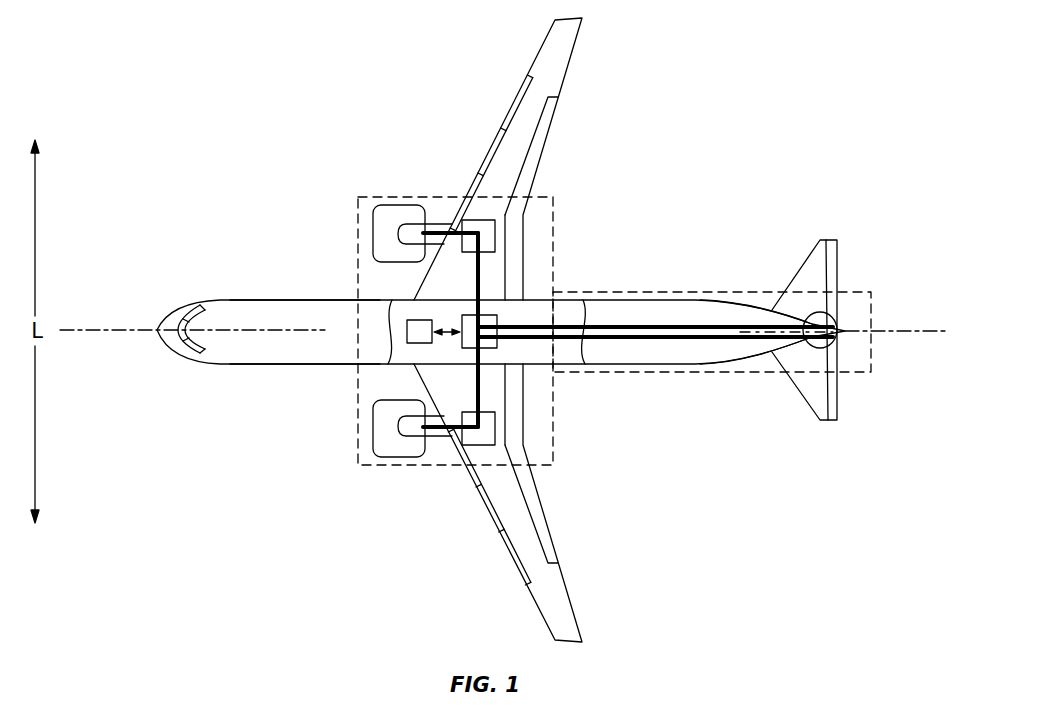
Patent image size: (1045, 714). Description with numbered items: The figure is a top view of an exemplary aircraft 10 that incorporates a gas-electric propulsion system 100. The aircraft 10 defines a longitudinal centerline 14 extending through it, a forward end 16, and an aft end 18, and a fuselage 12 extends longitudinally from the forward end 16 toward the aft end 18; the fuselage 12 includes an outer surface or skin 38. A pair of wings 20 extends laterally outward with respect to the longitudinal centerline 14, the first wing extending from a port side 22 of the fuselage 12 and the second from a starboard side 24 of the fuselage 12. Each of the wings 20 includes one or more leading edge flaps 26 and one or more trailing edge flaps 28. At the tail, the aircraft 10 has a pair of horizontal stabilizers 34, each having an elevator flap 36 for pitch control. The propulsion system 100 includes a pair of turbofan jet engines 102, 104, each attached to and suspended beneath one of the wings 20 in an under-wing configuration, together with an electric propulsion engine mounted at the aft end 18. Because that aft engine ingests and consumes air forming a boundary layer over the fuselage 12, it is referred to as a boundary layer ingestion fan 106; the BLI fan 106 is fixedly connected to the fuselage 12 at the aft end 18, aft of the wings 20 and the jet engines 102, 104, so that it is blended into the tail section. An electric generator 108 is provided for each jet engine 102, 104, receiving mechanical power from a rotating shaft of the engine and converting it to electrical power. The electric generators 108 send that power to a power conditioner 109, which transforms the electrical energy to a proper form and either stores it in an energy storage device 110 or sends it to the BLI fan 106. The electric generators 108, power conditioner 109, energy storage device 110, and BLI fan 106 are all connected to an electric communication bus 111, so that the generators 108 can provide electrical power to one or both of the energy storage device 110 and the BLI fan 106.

The aircraft 10 is at (698, 112).
The fuselage 12 is at (213, 348).
The longitudinal centerline 14 is at (83, 330).
The forward end 16 is at (156, 350).
The aft end 18 is at (779, 344).
The wings 20 is at (524, 330).
The port side 22 is at (288, 386).
The starboard side 24 is at (292, 292).
The leading edge flaps 26 is at (490, 512).
The trailing edge flaps 28 is at (543, 520).
The horizontal stabilizers 34 is at (812, 262).
The elevator flap 36 is at (828, 262).
The outer surface or skin 38 is at (650, 352).
The propulsion system 100 is at (632, 290).
The turbofan jet engine 102 is at (378, 457).
The turbofan jet engine 104 is at (387, 201).
The boundary layer ingestion (BLI) fan 106 is at (841, 297).
The electric generators 108 is at (497, 236).
The power conditioner 109 is at (497, 320).
The energy storage device 110 is at (406, 345).
The electric communication bus 111 is at (540, 356).